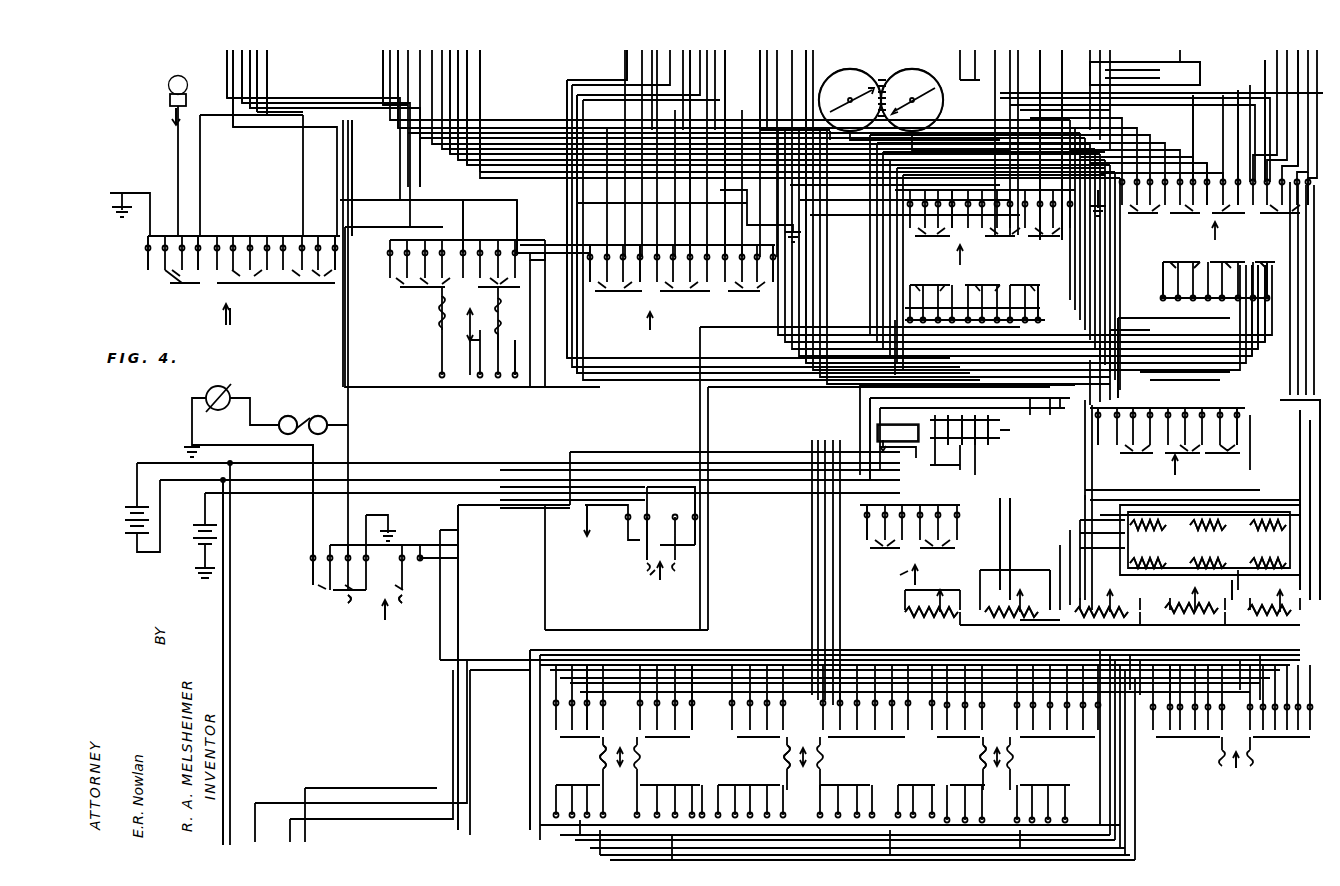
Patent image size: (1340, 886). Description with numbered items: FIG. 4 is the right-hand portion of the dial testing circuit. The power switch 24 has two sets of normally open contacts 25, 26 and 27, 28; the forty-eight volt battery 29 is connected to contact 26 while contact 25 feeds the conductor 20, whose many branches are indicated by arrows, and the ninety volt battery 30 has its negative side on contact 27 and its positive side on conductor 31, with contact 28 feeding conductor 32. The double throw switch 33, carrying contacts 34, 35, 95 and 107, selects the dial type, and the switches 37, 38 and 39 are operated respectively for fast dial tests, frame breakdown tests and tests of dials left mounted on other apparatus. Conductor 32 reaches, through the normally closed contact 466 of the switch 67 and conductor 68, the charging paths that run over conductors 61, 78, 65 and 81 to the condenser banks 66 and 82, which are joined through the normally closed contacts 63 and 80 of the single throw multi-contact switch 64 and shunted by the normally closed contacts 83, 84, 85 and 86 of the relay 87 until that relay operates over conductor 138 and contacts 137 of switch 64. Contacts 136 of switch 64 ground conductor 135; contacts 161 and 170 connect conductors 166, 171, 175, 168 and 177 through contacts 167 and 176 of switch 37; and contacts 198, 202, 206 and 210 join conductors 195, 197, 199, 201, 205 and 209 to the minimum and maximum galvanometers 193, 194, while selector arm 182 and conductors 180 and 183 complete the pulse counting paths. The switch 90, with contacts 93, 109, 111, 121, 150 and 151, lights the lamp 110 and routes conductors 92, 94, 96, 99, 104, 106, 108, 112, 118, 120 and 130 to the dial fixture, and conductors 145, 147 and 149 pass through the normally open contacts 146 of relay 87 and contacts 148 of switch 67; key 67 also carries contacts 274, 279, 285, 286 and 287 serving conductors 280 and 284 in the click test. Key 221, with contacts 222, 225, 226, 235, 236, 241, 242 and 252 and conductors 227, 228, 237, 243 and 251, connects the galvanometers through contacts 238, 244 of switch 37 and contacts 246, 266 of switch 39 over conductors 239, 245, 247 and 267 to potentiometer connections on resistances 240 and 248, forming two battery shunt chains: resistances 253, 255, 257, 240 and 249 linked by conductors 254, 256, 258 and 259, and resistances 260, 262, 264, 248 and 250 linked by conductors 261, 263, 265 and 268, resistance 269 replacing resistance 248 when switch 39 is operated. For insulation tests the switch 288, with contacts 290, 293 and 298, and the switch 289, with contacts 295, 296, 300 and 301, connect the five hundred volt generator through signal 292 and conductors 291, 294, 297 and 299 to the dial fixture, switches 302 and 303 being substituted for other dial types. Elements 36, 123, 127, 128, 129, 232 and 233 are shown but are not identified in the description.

The arrow/indicator 20 is at (532, 330).
The relay 24 is at (641, 578).
The contact 25 is at (601, 520).
The contact 26 is at (660, 537).
The contact 27 is at (671, 502).
The contact 28 is at (694, 537).
The battery 29 is at (188, 551).
The battery 30 is at (124, 542).
The conductor 31 is at (680, 409).
The conductor 32 is at (895, 248).
The relay coil 33 is at (421, 313).
The relay 34 is at (480, 324).
The relay coil 35 is at (516, 350).
The conductor 36 is at (243, 662).
The relay 37 is at (1155, 470).
The relay 38 is at (1215, 769).
The relay 39 is at (885, 575).
The ground conductor 61 is at (1061, 207).
The contact 63 is at (969, 217).
The contact 64 is at (1053, 302).
The conductor 65 is at (1129, 232).
The switch unit 66 is at (1145, 73).
The relay 67 is at (647, 298).
The conductor 68 is at (701, 153).
The conductor 78 is at (1069, 234).
The contact 80 is at (1000, 252).
The conductor 81 is at (1094, 232).
The conductor 82 is at (1208, 117).
The contact 83 is at (979, 441).
The contact 84 is at (957, 441).
The contact 85 is at (1005, 430).
The contact 86 is at (999, 441).
The indicator 87 is at (898, 433).
The relay 90 is at (205, 321).
The conductor 92 is at (283, 82).
The contact 93 is at (303, 295).
The conductor 94 is at (401, 210).
The conductor 95 is at (448, 226).
The conductor 96 is at (292, 135).
The conductor 99 is at (857, 446).
The conductor 104 is at (886, 435).
The conductor 106 is at (401, 76).
The conductor 107 is at (493, 226).
The conductor 108 is at (472, 399).
The contact 109 is at (129, 262).
The lamp 110 is at (168, 84).
The contact 111 is at (171, 294).
The conductor 112 is at (281, 79).
The conductor 118 is at (838, 420).
The conductor 120 is at (243, 126).
The contact 121 is at (258, 295).
The contact 123 is at (502, 294).
The conductor 127 is at (693, 425).
The contact 128 is at (320, 281).
The contact 129 is at (407, 289).
The conductor 130 is at (785, 428).
The conductor 135 is at (741, 153).
The contact 136 is at (1031, 252).
The conductor 137 is at (1174, 279).
The conductor 138 is at (695, 386).
The conductor 145 is at (700, 462).
The conductor 146 is at (971, 407).
The conductor 147 is at (842, 230).
The contact 148 is at (656, 271).
The conductor 149 is at (335, 118).
The relay 150 is at (247, 322).
The contact 151 is at (217, 266).
The contact 161 is at (1021, 239).
The conductor 166 is at (906, 236).
The contact 167 is at (1179, 451).
The conductor 168 is at (1185, 375).
The contact 170 is at (981, 282).
The conductor 171 is at (1248, 121).
The conductor 175 is at (902, 231).
The contact 176 is at (1223, 461).
The conductor 177 is at (904, 246).
The conductor 180 is at (791, 136).
The conductor 182 is at (1211, 184).
The conductor 183 is at (852, 598).
The meter 193 is at (858, 90).
The meter 194 is at (912, 90).
The conductor 195 is at (803, 206).
The conductor 197 is at (958, 338).
The contact 198 is at (991, 312).
The conductor 199 is at (841, 94).
The conductor 201 is at (1147, 358).
The contact 202 is at (930, 241).
The conductor 205 is at (1281, 307).
The contact 206 is at (930, 272).
The conductor 209 is at (1285, 303).
The contact 210 is at (1022, 282).
The contact 221 is at (1277, 254).
The contact 222 is at (1270, 225).
The contact 225 is at (1141, 223).
The contact 226 is at (1184, 223).
The conductor 227 is at (1114, 147).
The conductor 228 is at (1303, 108).
The conductor 232 is at (1088, 125).
The contact 233 is at (1294, 207).
The contact 235 is at (1144, 280).
The contact 236 is at (1180, 251).
The contact 237 is at (1197, 304).
The contact 238 is at (1105, 437).
The conductor 239 is at (1300, 500).
The resistor 240 is at (1269, 620).
The contact 241 is at (1286, 280).
The relay 242 is at (1225, 261).
The conductor 243 is at (1278, 311).
The contact 244 is at (1254, 433).
The conductor 245 is at (909, 491).
The contact 246 is at (871, 517).
The conductor 247 is at (1083, 517).
The resistor 248 is at (1101, 623).
The resistor 249 is at (1268, 531).
The resistor 250 is at (1268, 556).
The conductor 251 is at (1305, 500).
The relay 252 is at (1225, 211).
The resistor 253 is at (1164, 531).
The conductor 254 is at (1083, 534).
The resistor 255 is at (1193, 619).
The conductor 256 is at (1083, 552).
The resistor 257 is at (1208, 518).
The conductor 258 is at (1301, 510).
The conductor 259 is at (1200, 494).
The resistor 260 is at (1148, 556).
The conductor 261 is at (998, 549).
The resistor 262 is at (1011, 623).
The contact 263 is at (1041, 590).
The resistor 264 is at (1205, 556).
The conductor 265 is at (995, 544).
The contact 266 is at (926, 544).
The conductor 267 is at (904, 444).
The contact 268 is at (1225, 563).
The resistor 269 is at (931, 622).
The contact 274 is at (745, 299).
The contact 279 is at (591, 276).
The conductor 280 is at (560, 238).
The conductor 284 is at (346, 151).
The contact 285 is at (610, 309).
The contact 286 is at (688, 299).
The contact 287 is at (754, 285).
The relay 288 is at (336, 620).
The relay 289 is at (641, 759).
The relay coil 290 is at (338, 607).
The lamp 291 is at (324, 417).
The lamp 292 is at (281, 417).
The relay coil 293 is at (415, 606).
The conductor 294 is at (617, 740).
The contact 295 is at (598, 725).
The contact 296 is at (612, 697).
The conductor 297 is at (268, 501).
The contact 298 is at (301, 582).
The conductor 299 is at (592, 630).
The contact 300 is at (709, 705).
The contact 301 is at (686, 724).
The relay 302 is at (820, 757).
The relay 303 is at (1014, 757).
The relay 466 is at (653, 322).